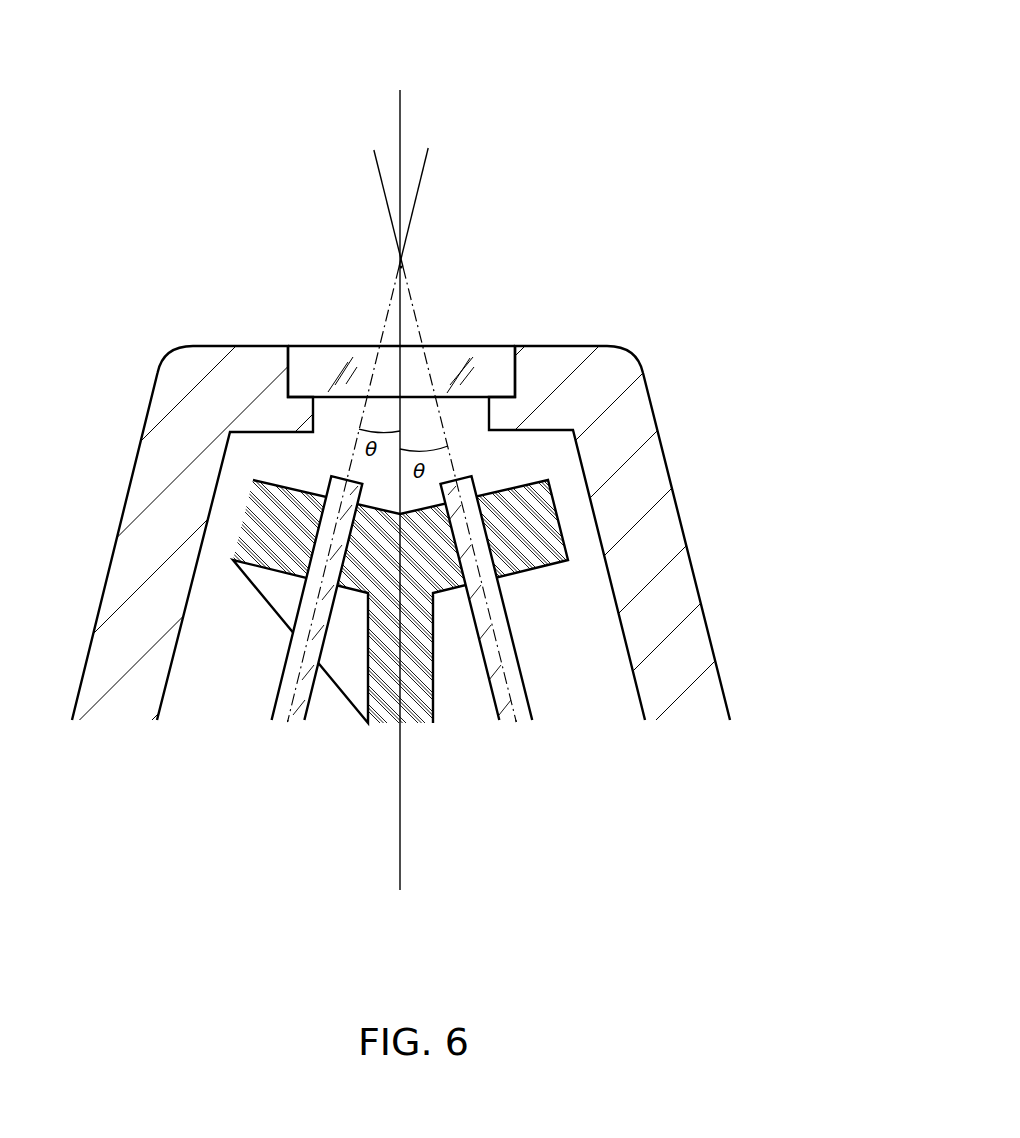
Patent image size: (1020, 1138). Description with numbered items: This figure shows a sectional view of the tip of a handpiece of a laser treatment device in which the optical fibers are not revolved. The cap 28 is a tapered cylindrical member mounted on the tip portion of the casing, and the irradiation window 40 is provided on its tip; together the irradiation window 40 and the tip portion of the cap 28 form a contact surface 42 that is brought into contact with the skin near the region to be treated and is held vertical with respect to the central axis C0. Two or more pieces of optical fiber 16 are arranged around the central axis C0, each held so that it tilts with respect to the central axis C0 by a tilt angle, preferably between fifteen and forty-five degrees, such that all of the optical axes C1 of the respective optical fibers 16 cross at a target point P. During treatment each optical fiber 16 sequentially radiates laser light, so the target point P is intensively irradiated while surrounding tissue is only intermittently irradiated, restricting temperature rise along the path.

The optical fiber 16 is at (298, 664).
The cap 28 is at (657, 540).
The irradiation window 40 is at (316, 372).
The contact surface 42 is at (235, 346).
The central axis C0 is at (400, 118).
The optical axis C1 is at (375, 180).
The target point P is at (403, 267).